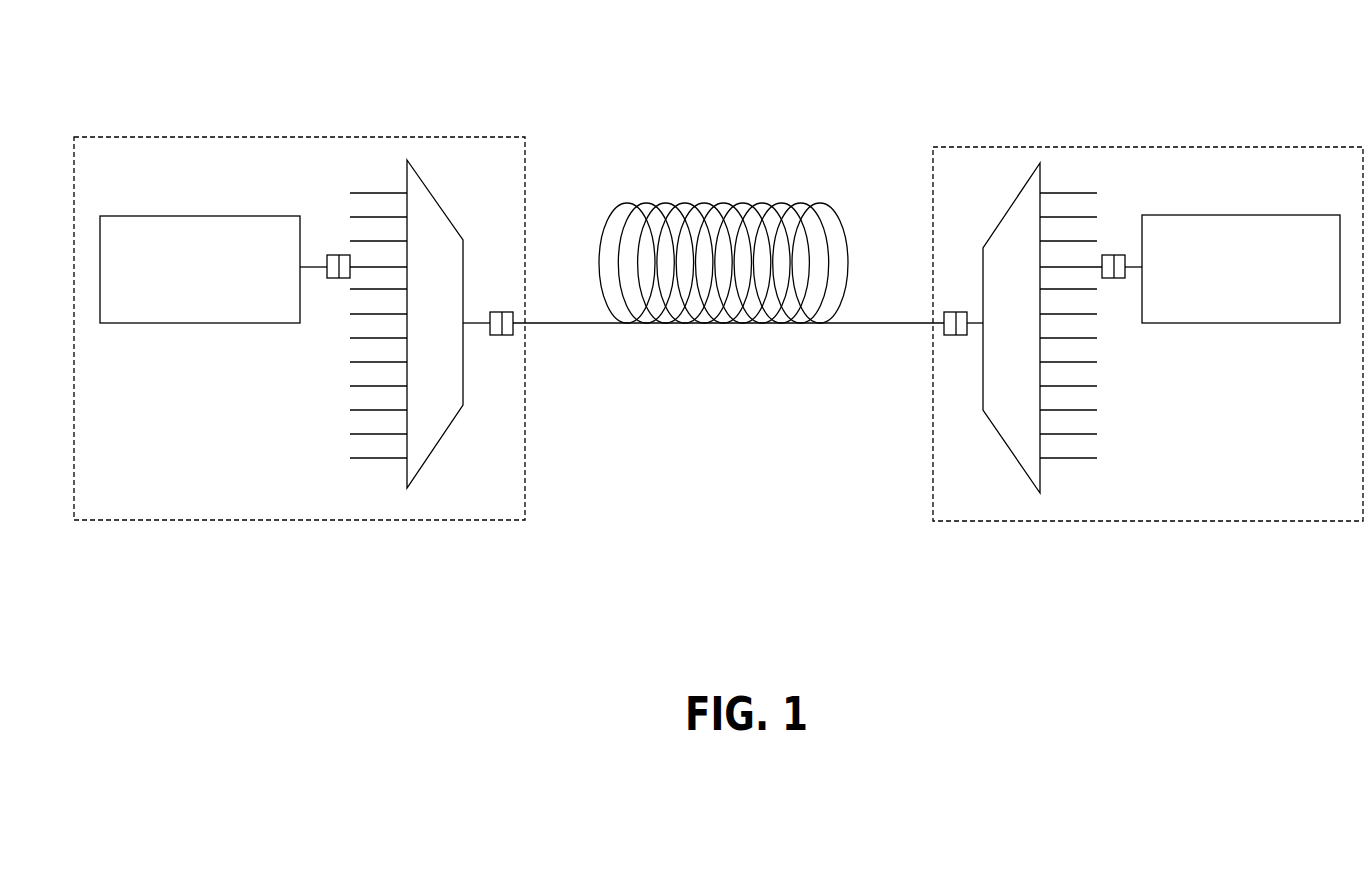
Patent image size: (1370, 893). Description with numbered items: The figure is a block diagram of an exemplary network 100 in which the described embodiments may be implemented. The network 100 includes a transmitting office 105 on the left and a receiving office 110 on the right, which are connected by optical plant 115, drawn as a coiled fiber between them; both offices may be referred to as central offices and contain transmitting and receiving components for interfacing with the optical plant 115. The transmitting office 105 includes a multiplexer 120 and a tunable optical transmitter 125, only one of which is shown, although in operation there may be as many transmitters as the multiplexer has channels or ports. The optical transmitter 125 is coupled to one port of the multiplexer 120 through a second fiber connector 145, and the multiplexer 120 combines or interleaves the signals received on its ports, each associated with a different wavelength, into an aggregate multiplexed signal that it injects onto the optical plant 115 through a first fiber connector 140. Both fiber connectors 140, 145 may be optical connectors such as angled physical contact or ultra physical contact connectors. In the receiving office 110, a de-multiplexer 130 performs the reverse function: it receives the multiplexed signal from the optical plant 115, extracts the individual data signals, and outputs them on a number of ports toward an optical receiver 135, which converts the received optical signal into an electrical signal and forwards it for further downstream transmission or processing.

The network 100 is at (660, 82).
The transmitting office 105 is at (150, 503).
The receiving office 110 is at (1325, 503).
The optical plant 115 is at (708, 203).
The multiplexer 120 is at (426, 227).
The tunable optical transmitter 125 is at (136, 235).
The de-multiplexer 130 is at (997, 237).
The optical receiver 135 is at (1248, 230).
The first fiber connector 140 is at (511, 348).
The second fiber connector 145 is at (338, 279).